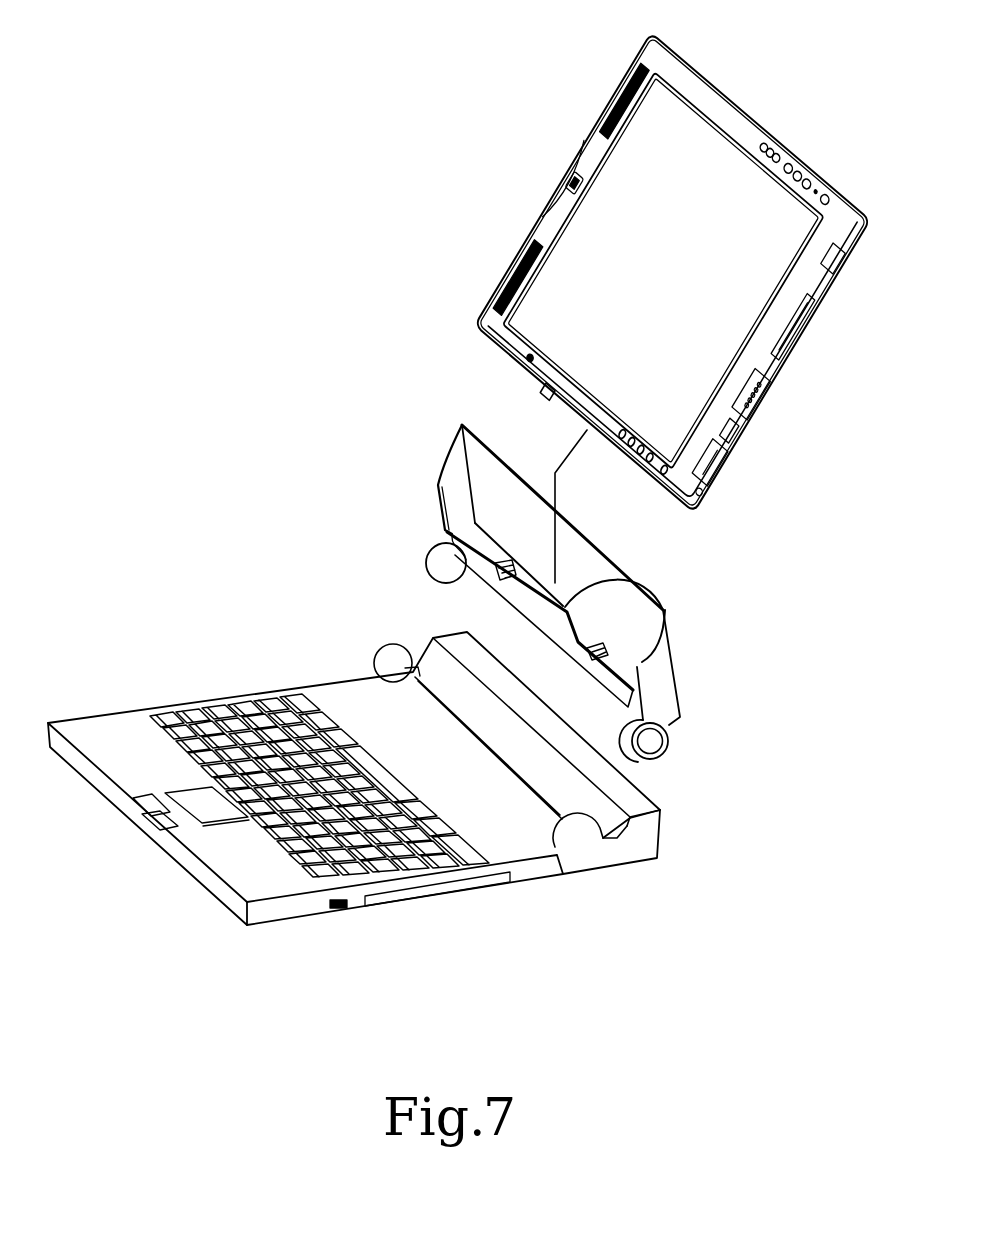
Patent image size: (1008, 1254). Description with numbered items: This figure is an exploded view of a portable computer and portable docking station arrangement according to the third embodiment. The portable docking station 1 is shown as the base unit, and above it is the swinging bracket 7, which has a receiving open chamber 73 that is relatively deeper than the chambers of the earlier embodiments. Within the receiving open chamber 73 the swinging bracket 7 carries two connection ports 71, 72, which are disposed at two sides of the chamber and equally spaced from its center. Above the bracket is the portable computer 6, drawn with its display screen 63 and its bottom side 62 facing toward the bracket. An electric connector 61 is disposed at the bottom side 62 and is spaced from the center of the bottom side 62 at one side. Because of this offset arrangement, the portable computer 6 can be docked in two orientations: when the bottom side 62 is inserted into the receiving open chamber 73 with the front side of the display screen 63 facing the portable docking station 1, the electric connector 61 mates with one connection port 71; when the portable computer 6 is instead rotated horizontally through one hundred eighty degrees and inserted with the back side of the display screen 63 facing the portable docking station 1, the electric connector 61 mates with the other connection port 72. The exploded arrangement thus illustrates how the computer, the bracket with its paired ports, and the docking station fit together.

The portable docking station 1 is at (282, 887).
The portable computer 6 is at (651, 272).
The electric connector 61 is at (540, 392).
The bottom side 62 is at (512, 360).
The display screen 63 is at (753, 207).
The swinging bracket 7 is at (580, 593).
The connection port 71 is at (497, 573).
The connection port 72 is at (620, 638).
The receiving open chamber 73 is at (643, 586).